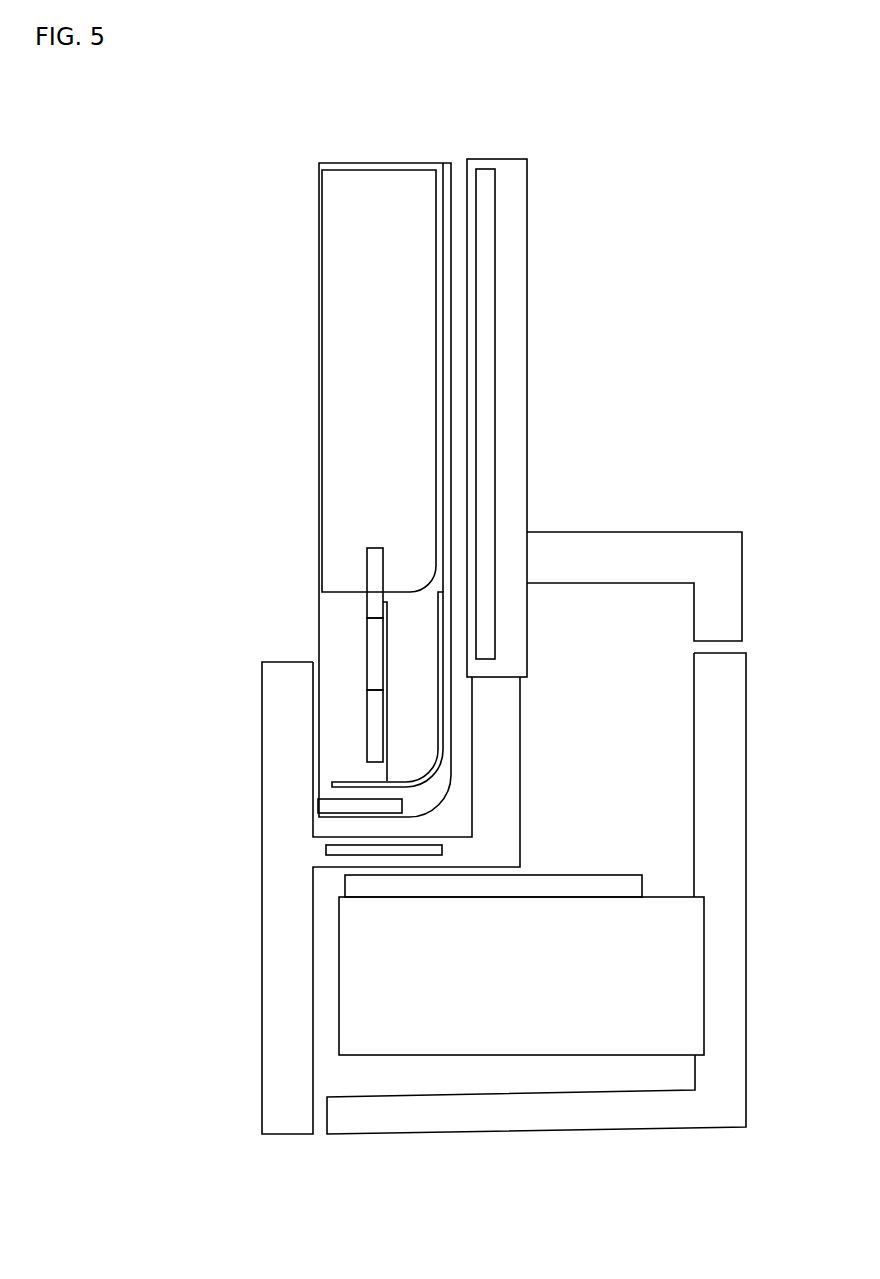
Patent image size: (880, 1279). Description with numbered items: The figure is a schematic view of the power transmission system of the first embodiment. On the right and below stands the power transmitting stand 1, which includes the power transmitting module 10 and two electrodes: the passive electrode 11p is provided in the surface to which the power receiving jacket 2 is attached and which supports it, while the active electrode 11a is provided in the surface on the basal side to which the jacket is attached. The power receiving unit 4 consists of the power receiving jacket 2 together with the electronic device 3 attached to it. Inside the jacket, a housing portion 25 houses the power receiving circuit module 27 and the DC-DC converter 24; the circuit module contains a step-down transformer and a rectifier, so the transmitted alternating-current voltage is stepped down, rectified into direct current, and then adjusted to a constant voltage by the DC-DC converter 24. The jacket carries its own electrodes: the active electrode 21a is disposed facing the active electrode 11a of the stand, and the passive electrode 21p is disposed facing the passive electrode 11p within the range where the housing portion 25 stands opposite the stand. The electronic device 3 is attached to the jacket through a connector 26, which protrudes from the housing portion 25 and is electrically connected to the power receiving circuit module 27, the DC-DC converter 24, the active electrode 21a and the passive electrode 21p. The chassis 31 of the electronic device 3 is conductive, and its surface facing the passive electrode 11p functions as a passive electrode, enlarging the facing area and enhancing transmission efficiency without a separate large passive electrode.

The power transmitting stand 1 is at (617, 386).
The power receiving jacket 2 is at (296, 651).
The electronic device 3 is at (337, 203).
The power receiving unit 4 is at (311, 490).
The power transmitting module 10 is at (692, 970).
The passive electrode 11p is at (485, 233).
The active electrode 11a is at (345, 851).
The passive electrode 21p is at (438, 600).
The active electrode 21a is at (309, 805).
The DC-DC converter 24 is at (367, 723).
The housing portion 25 is at (543, 593).
The connector 26 is at (367, 576).
The power receiving circuit module 27 is at (367, 648).
The chassis 31 is at (436, 264).